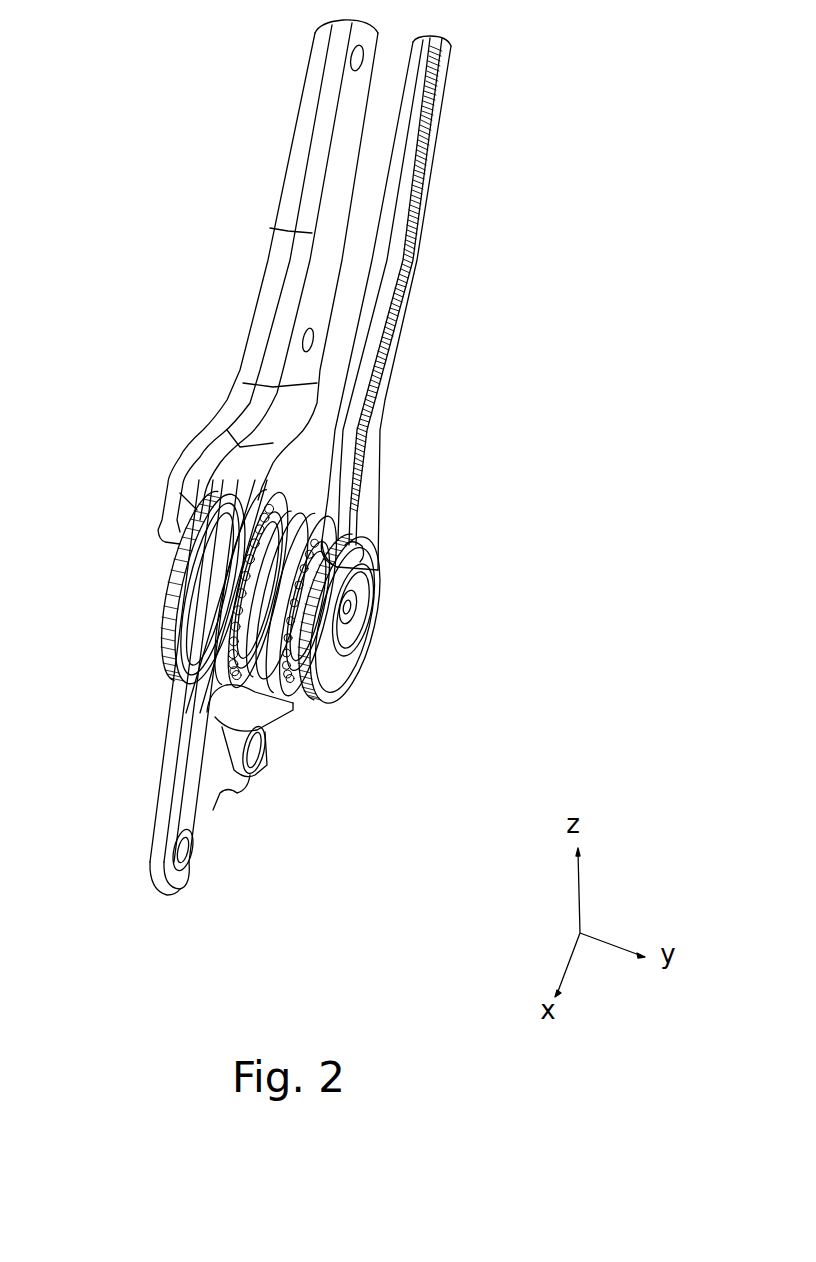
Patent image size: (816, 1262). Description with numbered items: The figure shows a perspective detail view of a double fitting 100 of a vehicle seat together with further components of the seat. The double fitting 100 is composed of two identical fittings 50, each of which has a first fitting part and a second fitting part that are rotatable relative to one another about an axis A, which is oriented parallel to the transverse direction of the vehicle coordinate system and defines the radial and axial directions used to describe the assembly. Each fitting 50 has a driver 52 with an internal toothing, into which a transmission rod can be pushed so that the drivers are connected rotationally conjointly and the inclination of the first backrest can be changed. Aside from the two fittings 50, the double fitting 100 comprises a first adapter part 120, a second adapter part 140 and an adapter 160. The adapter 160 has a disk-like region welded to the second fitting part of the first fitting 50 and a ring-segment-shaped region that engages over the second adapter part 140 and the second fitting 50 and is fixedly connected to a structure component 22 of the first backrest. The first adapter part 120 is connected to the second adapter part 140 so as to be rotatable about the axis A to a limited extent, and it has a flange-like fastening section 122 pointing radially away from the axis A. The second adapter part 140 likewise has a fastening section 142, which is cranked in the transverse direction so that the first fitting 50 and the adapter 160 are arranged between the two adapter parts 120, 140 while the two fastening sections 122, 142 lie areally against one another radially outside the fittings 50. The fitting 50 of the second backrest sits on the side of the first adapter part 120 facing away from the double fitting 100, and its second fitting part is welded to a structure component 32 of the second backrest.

The structure component of the first backrest 22 is at (442, 80).
The structure component of the second backrest 32 is at (308, 73).
The fitting 50 is at (287, 496).
The driver 52 is at (380, 580).
The double fitting 100 is at (175, 914).
The first adapter part 120 is at (160, 803).
The fastening section 122 is at (147, 860).
The second adapter part 140 is at (213, 793).
The fastening section 142 is at (208, 806).
The adapter 160 is at (318, 481).
The axis A is at (383, 617).